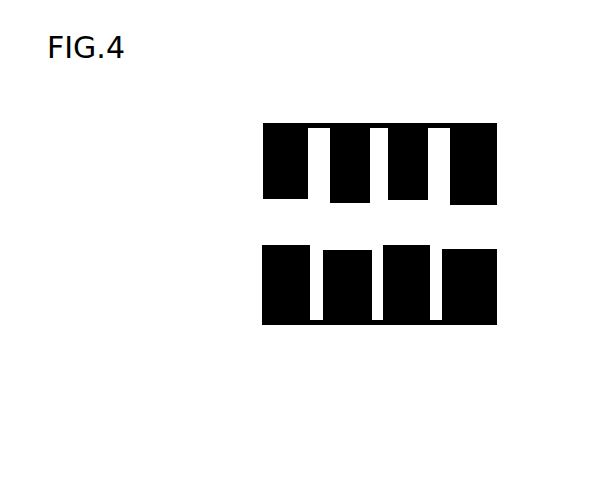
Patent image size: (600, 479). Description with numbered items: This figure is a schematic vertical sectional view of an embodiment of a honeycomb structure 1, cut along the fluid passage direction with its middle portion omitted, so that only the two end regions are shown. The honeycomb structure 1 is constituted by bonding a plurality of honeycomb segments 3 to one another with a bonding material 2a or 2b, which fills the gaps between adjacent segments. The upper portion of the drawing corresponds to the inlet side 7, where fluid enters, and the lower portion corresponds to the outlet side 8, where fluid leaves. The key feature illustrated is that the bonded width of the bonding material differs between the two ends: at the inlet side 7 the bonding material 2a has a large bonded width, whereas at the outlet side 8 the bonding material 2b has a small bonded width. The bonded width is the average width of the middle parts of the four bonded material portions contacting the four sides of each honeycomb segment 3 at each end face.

The honeycomb structure 1 is at (276, 110).
The inlet side 7 is at (382, 92).
The outlet side 8 is at (377, 362).
The bonding material 2a is at (440, 140).
The bonding material 2b is at (437, 325).
The honeycomb segment 3 is at (497, 168).